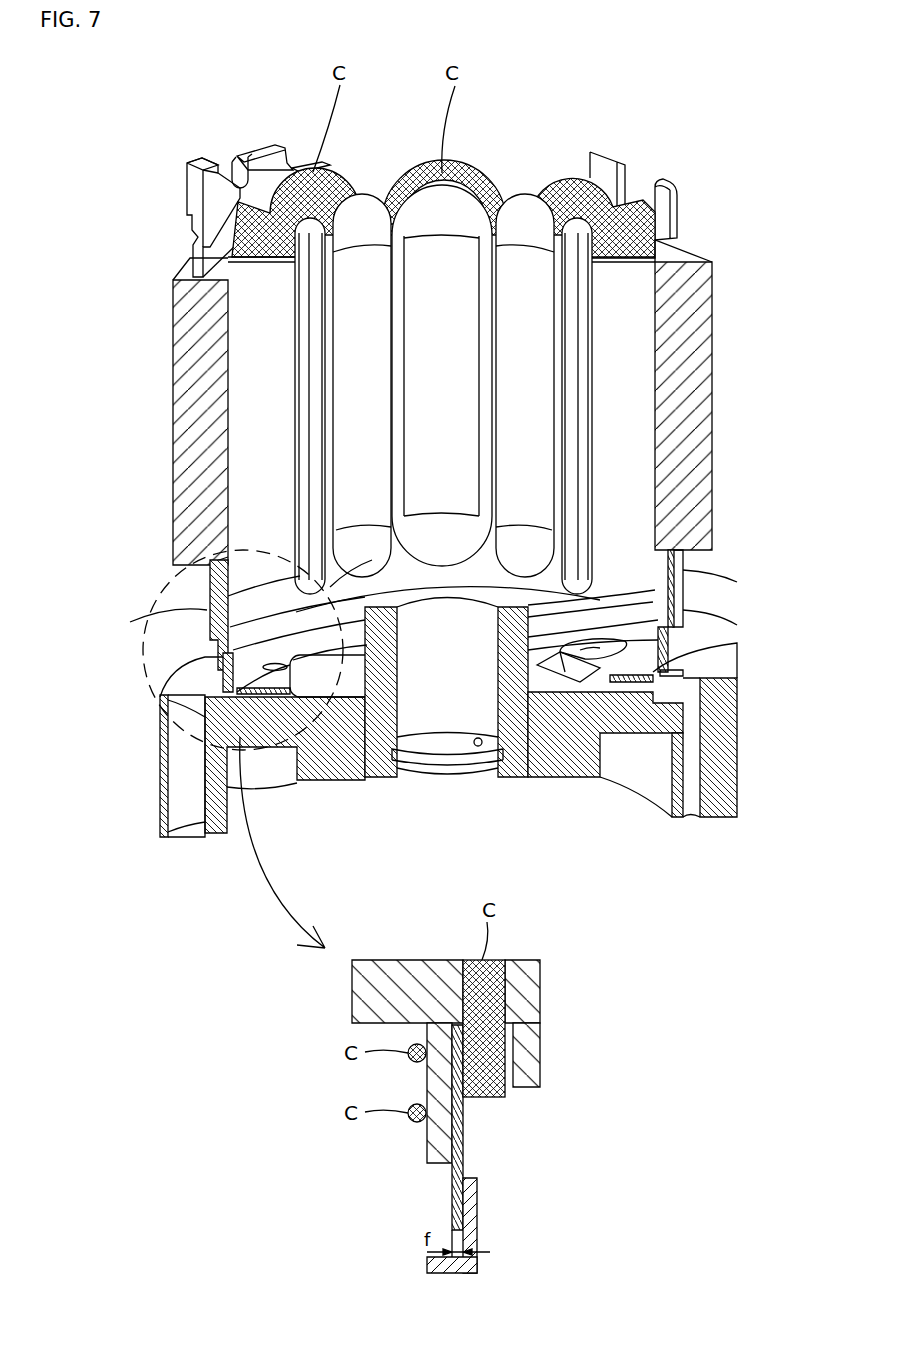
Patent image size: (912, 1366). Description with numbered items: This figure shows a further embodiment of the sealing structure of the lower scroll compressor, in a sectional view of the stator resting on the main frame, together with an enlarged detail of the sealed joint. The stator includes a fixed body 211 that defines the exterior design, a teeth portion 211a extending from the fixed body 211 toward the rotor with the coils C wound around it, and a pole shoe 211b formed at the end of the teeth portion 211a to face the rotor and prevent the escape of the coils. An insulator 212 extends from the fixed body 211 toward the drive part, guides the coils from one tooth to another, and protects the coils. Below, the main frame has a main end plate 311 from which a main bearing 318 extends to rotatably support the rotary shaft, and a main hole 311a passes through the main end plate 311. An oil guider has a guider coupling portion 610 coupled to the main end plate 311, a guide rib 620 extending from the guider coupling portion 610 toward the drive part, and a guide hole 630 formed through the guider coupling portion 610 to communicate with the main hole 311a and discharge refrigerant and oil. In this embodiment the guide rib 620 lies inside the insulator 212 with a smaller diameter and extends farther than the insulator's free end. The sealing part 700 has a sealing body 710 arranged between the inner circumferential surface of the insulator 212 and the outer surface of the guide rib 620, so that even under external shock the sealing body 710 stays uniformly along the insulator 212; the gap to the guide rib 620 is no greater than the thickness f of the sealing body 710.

The fixed body 211 is at (190, 343).
The teeth portion 211a is at (245, 403).
The pole shoe 211b is at (230, 528).
The insulator 212 is at (683, 583).
The sealing part 700 is at (688, 627).
The guide rib 620 is at (688, 657).
The guider coupling portion 610 is at (700, 718).
The main end plate 311 is at (215, 718).
The main bearing 318 is at (353, 780).
The main hole 311a is at (563, 670).
The guide hole 630 is at (588, 653).
The sealing body 710 is at (245, 622).